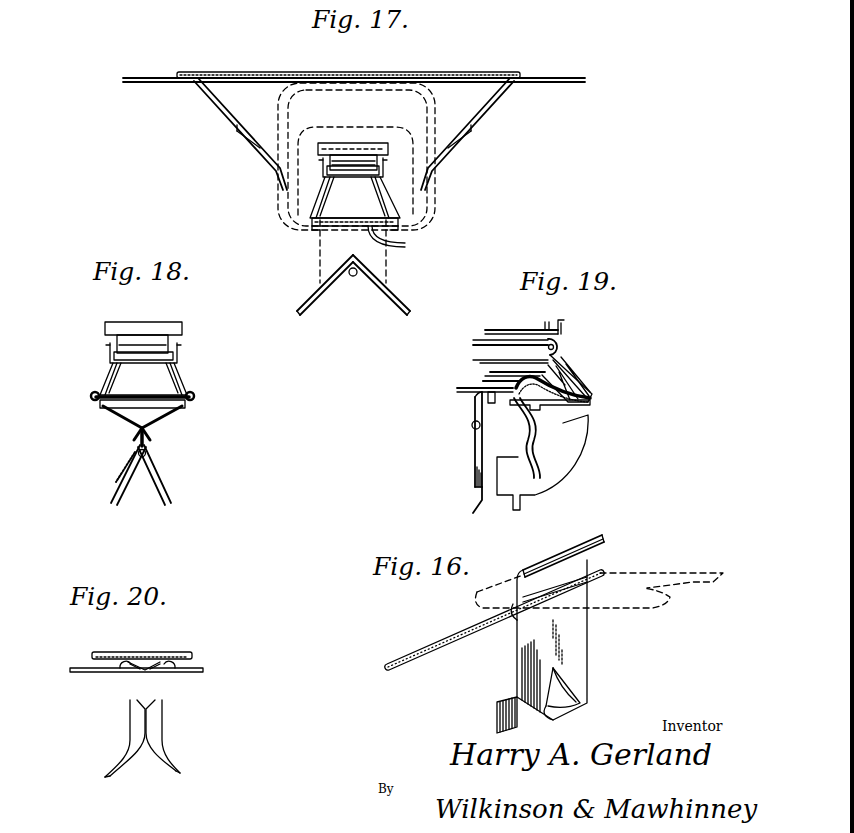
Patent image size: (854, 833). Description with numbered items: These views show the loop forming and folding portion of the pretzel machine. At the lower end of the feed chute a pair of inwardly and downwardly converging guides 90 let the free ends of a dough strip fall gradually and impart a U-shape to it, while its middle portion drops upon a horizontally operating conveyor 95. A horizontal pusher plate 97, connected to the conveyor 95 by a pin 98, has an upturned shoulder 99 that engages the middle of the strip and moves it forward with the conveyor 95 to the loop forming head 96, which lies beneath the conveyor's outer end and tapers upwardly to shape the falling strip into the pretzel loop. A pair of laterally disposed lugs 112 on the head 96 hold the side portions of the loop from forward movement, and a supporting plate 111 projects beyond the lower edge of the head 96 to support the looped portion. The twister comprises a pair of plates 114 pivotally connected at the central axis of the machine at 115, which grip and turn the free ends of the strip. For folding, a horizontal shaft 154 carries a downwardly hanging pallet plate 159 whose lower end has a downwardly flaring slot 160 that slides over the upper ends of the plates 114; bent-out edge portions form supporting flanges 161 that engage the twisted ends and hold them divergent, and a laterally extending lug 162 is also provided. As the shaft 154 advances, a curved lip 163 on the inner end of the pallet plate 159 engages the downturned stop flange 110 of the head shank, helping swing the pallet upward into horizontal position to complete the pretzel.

In FIG. 17, the converging guides 90 is at (248, 139).
In FIG. 17, the conveyor 95 is at (342, 160).
In FIG. 18, the conveyor 95 is at (157, 345).
In FIG. 19, the conveyor 95 is at (558, 339).
In FIG. 17, the loop forming head 96 is at (385, 200).
In FIG. 18, the loop forming head 96 is at (107, 377).
In FIG. 19, the loop forming head 96 is at (570, 378).
In FIG. 19, the pusher plate 97 is at (494, 328).
In FIG. 19, the pin 98 is at (547, 328).
In FIG. 17, the upturned shoulder 99 is at (370, 143).
In FIG. 18, the upturned shoulder 99 is at (105, 326).
In FIG. 19, the upturned shoulder 99 is at (565, 321).
In FIG. 19, the stop flange 110 is at (478, 388).
In FIG. 17, the supporting plate 111 is at (405, 245).
In FIG. 18, the supporting plate 111 is at (121, 415).
In FIG. 19, the supporting plate 111 is at (590, 407).
In FIG. 19, the lugs 112 is at (512, 402).
In FIG. 17, the plates 114 is at (300, 300).
In FIG. 18, the plates 114 is at (110, 499).
In FIG. 19, the plates 114 is at (548, 472).
In FIG. 20, the plates 114 is at (110, 768).
In FIG. 17, the pivot 115 is at (356, 277).
In FIG. 18, the pivot 115 is at (142, 457).
In FIG. 19, the horizontal shaft 154 is at (472, 428).
In FIG. 16, the horizontal shaft 154 is at (423, 648).
In FIG. 19, the pallet plate 159 is at (473, 447).
In FIG. 20, the pallet plate 159 is at (192, 672).
In FIG. 16, the pallet plate 159 is at (520, 645).
In FIG. 20, the slot 160 is at (150, 665).
In FIG. 16, the slot 160 is at (566, 705).
In FIG. 19, the supporting flanges 161 is at (478, 500).
In FIG. 20, the supporting flanges 161 is at (130, 672).
In FIG. 16, the supporting flanges 161 is at (553, 720).
In FIG. 16, the lug 162 is at (497, 705).
In FIG. 19, the curved lip 163 is at (473, 399).
In FIG. 16, the curved lip 163 is at (555, 562).